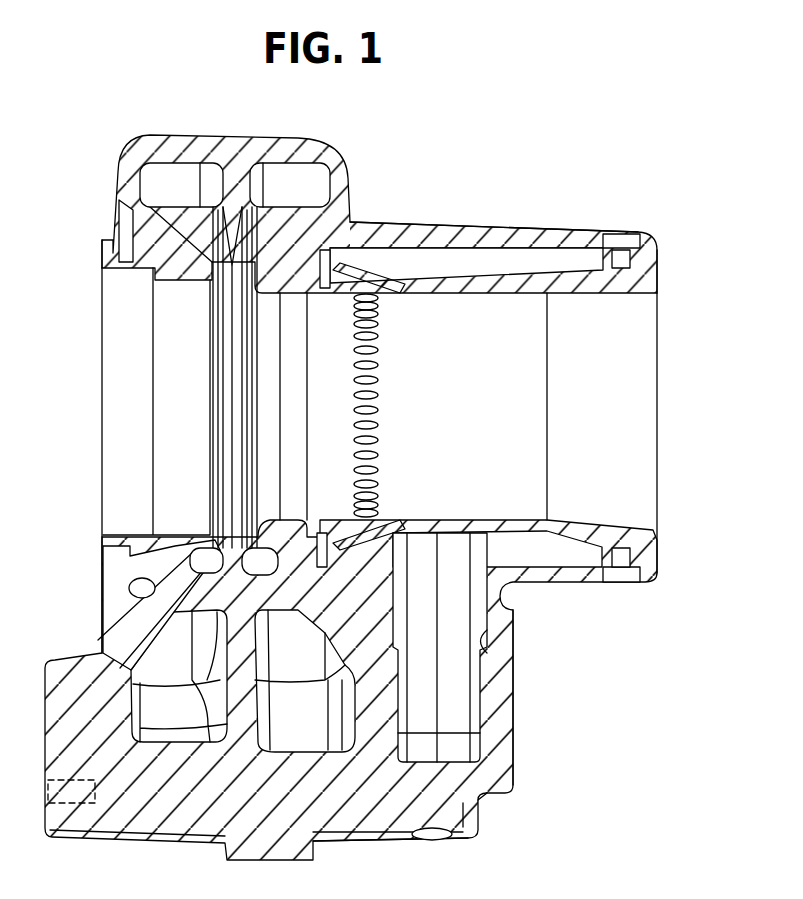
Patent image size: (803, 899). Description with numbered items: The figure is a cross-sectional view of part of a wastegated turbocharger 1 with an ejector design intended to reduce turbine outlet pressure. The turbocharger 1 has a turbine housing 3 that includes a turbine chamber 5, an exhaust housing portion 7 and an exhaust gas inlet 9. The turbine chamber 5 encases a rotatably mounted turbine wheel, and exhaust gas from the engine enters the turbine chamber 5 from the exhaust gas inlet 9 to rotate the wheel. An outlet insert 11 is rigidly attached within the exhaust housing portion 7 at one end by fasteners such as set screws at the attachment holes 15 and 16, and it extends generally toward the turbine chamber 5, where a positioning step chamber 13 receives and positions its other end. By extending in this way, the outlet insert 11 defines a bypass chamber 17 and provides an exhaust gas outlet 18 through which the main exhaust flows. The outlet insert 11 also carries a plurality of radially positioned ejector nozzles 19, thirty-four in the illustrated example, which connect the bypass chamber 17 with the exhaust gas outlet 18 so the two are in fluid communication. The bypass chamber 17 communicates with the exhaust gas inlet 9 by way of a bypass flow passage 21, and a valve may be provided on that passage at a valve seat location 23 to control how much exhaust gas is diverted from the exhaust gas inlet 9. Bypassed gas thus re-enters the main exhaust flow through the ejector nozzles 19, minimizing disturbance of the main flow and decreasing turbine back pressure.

The turbocharger 1 is at (144, 109).
The turbine housing 3 is at (257, 138).
The turbine chamber 5 is at (263, 332).
The exhaust housing portion 7 is at (458, 230).
The exhaust gas inlet 9 is at (292, 186).
The outlet insert 11 is at (658, 320).
The positioning step chamber 13 is at (322, 250).
The attachment hole 15 is at (623, 231).
The attachment hole 16 is at (627, 258).
The bypass chamber 17 is at (478, 270).
The exhaust gas outlet 18 is at (625, 390).
The ejector nozzles 19 is at (377, 330).
The bypass flow passage 21 is at (457, 683).
The valve seat location 23 is at (503, 737).